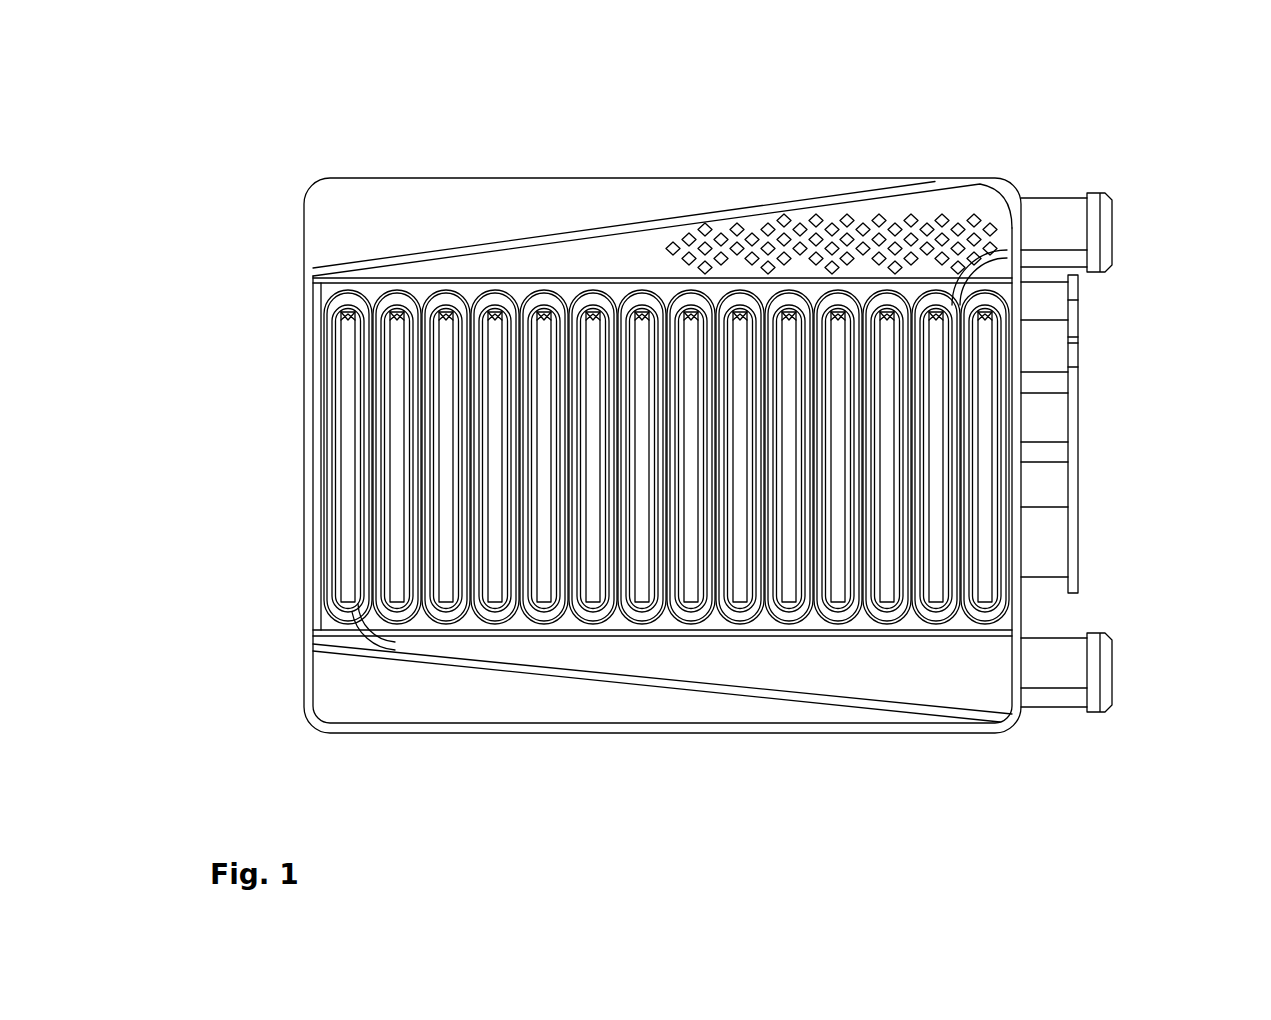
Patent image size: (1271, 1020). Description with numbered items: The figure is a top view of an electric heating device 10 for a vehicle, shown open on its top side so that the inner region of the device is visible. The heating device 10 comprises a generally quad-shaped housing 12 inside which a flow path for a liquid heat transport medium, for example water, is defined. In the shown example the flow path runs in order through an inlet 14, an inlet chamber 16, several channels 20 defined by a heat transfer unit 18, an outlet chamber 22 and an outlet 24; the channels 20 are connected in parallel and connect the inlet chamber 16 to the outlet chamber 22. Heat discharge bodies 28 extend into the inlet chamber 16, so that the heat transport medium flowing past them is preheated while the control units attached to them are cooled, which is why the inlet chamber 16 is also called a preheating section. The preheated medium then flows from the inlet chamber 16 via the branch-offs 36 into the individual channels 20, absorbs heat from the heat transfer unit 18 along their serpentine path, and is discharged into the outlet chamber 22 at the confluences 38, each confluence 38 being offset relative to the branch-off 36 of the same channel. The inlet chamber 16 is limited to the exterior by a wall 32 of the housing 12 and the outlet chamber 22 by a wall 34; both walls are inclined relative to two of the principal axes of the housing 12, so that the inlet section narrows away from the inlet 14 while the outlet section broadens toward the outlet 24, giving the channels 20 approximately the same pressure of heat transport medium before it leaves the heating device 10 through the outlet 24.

The electric heating device 10 is at (180, 130).
The housing 12 is at (478, 247).
The inlet 14 is at (1113, 237).
The inlet chamber 16 is at (600, 250).
The heat transfer unit 18 is at (540, 300).
The channels 20 is at (355, 292).
The outlet chamber 22 is at (723, 663).
The outlet 24 is at (1113, 672).
The heat discharge body 28 is at (906, 216).
The wall 32 is at (632, 224).
The wall 34 is at (562, 678).
The branch-offs 36 is at (425, 300).
The confluences 38 is at (458, 600).